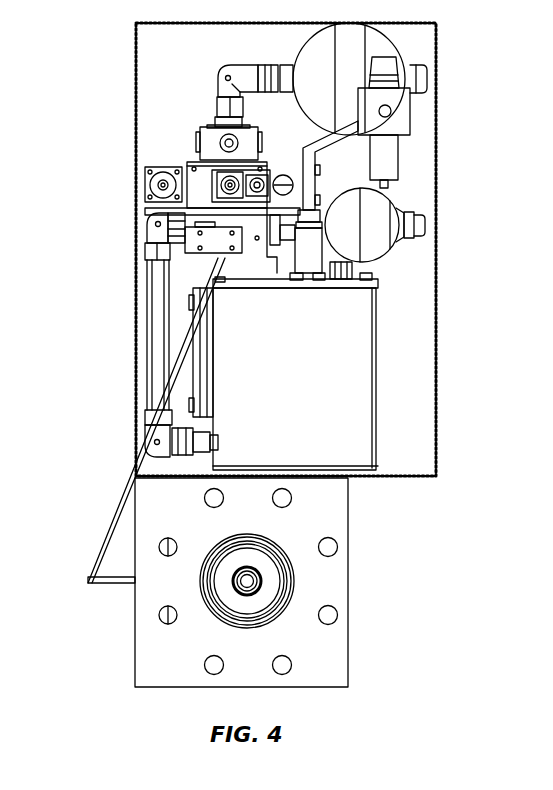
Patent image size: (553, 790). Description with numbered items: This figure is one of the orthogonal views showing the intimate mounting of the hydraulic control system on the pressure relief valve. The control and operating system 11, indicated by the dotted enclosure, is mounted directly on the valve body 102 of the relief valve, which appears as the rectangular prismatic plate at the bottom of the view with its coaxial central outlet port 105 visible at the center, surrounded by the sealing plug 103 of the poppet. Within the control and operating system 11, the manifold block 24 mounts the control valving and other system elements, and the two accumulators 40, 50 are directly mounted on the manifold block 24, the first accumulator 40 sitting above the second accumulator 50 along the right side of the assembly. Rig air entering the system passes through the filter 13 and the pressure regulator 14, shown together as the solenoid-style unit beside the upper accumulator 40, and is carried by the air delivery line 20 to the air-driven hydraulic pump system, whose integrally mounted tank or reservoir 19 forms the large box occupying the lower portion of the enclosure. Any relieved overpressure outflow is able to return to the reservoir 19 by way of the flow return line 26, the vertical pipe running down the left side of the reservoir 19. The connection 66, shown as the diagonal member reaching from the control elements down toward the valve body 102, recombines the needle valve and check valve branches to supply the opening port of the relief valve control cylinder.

The control and operating system 11 is at (438, 425).
The filter 13 is at (444, 122).
The pressure regulator 14 is at (430, 111).
The tank or reservoir 19 is at (377, 375).
The air delivery line 20 is at (352, 148).
The manifold block 24 is at (192, 160).
The flow return line 26 is at (143, 375).
The accumulator 40 is at (430, 46).
The accumulator 50 is at (430, 201).
The connection 66 is at (107, 533).
The valve body 102 is at (350, 546).
The sealing plug 103 is at (272, 577).
The central outlet port 105 is at (272, 588).